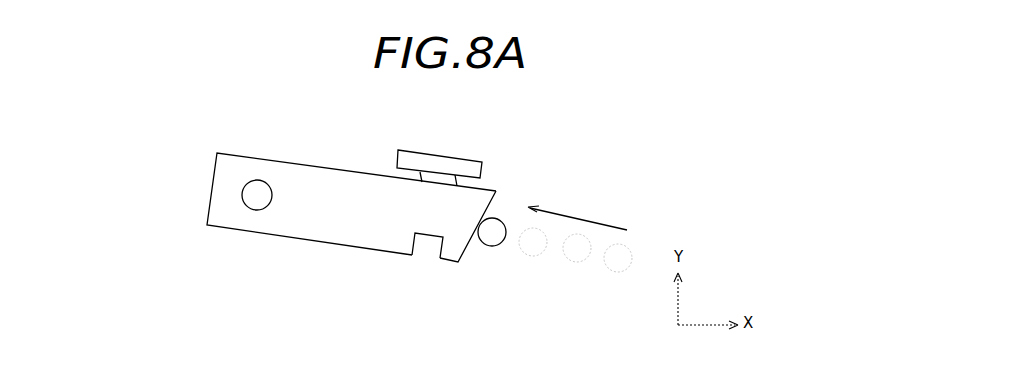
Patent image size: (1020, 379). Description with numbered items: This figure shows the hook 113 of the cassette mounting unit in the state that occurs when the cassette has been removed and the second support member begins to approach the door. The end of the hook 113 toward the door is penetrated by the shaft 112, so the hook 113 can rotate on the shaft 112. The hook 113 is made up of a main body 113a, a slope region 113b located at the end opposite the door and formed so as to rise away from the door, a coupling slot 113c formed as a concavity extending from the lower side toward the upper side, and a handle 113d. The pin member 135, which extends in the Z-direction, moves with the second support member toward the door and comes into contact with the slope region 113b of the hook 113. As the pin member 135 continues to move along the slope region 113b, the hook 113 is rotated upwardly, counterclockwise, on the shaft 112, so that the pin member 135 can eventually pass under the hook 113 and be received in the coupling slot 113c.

The shaft 112 is at (255, 203).
The hook 113 is at (206, 190).
The main body 113a is at (305, 228).
The slope region 113b is at (492, 206).
The coupling slot 113c is at (433, 249).
The handle 113d is at (468, 137).
The pin member 135 is at (490, 237).